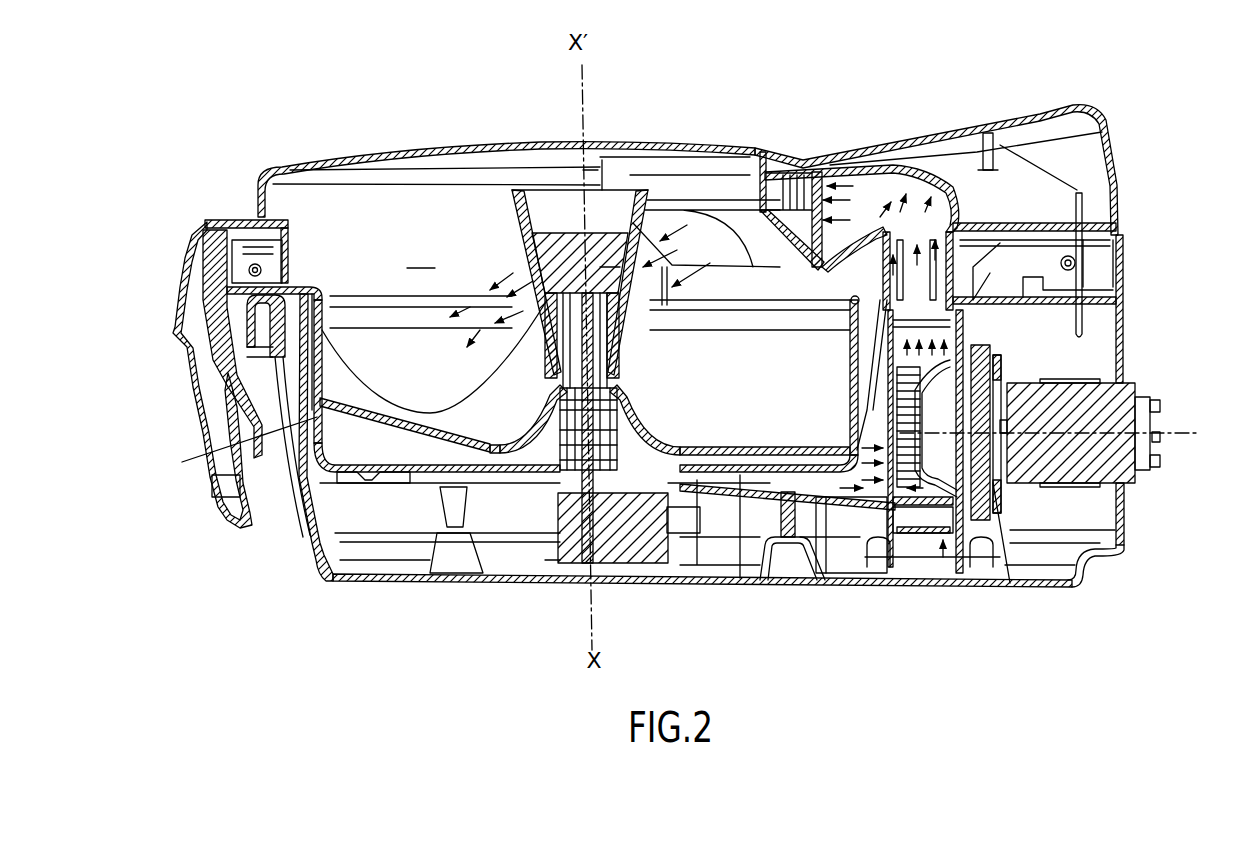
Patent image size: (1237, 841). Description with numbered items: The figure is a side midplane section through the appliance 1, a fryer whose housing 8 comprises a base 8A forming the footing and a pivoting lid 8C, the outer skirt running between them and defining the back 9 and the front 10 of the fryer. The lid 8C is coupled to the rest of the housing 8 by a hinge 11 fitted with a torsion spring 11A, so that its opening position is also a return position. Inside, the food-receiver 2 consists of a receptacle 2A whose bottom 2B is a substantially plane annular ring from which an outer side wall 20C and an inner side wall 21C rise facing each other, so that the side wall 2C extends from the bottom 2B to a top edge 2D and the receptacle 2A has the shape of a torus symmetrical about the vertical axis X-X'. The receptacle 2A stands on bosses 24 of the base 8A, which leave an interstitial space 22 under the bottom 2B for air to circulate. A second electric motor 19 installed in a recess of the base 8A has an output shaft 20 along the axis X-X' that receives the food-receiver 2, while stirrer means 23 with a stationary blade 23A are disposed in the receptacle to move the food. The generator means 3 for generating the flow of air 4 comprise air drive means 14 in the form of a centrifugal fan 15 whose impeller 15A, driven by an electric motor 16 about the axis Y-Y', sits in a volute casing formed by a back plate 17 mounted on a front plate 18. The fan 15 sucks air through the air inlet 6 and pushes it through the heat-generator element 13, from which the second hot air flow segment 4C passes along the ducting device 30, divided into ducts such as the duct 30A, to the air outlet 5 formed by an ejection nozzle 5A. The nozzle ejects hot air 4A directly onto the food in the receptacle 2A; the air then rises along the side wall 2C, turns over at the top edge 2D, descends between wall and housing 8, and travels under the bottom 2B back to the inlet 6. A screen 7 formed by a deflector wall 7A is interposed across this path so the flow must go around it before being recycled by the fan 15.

The appliance 1 is at (315, 592).
The food-receiver 2 is at (468, 350).
The receptacle 2A is at (392, 315).
The bottom 2B is at (747, 472).
The side wall 2C is at (625, 397).
The top edge 2D is at (822, 292).
The generator means for generating a flow of air 3 is at (1045, 375).
The flow of air 4 is at (918, 190).
The hot air flow segment 4A is at (667, 227).
The second hot air flow segment 4C is at (855, 185).
The air outlet 5 is at (733, 262).
The ejection nozzle 5A is at (700, 250).
The air inlet 6 is at (850, 450).
The screen 7 is at (828, 497).
The deflector wall 7A is at (233, 446).
The housing 8 is at (892, 588).
The base 8A is at (1070, 590).
The lid 8C is at (297, 161).
The back 9 is at (1152, 180).
The front 10 is at (178, 235).
The hinge 11 is at (1088, 252).
The torsion spring 11A is at (1087, 327).
The heat-generator element 13 is at (963, 170).
The air drive means 14 is at (955, 545).
The centrifugal fan 15 is at (933, 540).
The impeller 15A is at (1000, 520).
The electric motor 16 is at (1124, 371).
The back plate 17 is at (990, 520).
The front plate 18 is at (868, 535).
The second electric motor 19 is at (578, 495).
The output shaft 20 is at (623, 432).
The outer side wall 20C is at (330, 410).
The inner side wall 21C is at (550, 410).
The interstitial space 22 is at (517, 473).
The stirrer means 23 is at (433, 425).
The blade 23A is at (380, 326).
The bosses 24 is at (307, 537).
The ducting device 30 is at (876, 197).
The duct 30A is at (657, 217).